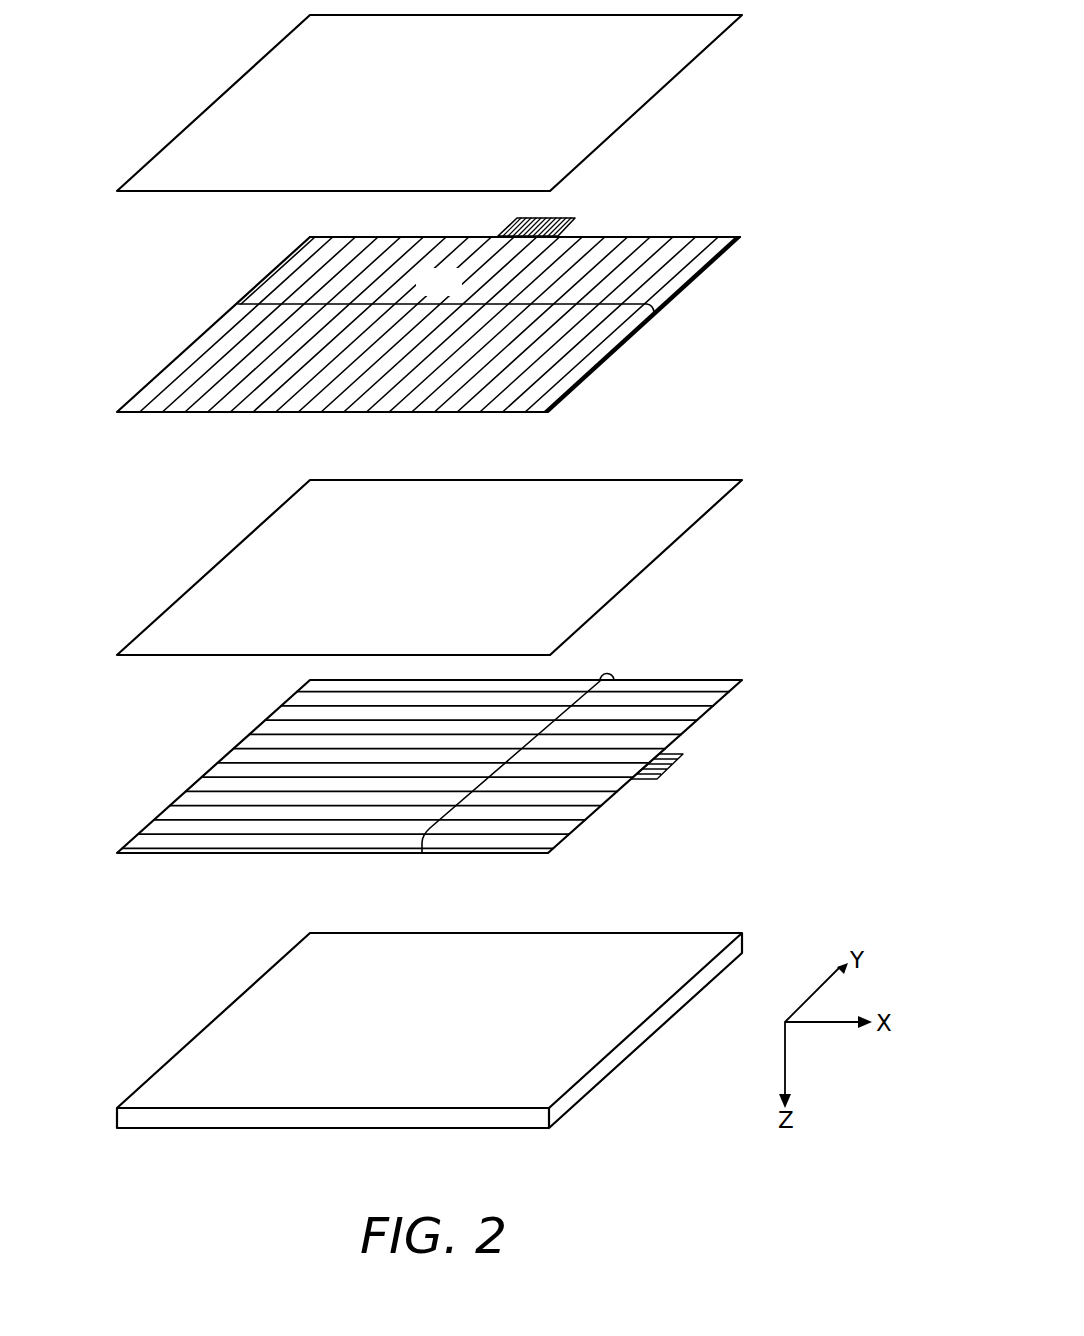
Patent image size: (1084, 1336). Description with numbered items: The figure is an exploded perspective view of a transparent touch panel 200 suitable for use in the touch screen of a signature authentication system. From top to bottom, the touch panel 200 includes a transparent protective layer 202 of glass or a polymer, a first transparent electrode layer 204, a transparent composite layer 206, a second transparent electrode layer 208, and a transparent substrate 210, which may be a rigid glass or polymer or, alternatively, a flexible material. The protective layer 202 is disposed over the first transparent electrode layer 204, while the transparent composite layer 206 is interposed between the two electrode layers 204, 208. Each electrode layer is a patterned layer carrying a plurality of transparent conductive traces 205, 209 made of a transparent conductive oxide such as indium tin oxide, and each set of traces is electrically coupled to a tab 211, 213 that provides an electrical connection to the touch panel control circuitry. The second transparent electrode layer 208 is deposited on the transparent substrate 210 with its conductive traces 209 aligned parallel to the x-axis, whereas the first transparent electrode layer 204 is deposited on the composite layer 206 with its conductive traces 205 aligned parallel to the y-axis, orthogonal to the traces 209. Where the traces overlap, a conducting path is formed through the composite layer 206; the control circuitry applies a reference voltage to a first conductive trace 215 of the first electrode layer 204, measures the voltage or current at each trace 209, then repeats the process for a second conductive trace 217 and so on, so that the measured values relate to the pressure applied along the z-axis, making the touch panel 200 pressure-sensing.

The transparent touch panel 200 is at (482, 571).
The transparent protective layer 202 is at (216, 100).
The first transparent electrode layer 204 is at (428, 298).
The transparent conductive traces 205 is at (452, 304).
The transparent composite layer 206 is at (216, 565).
The second transparent electrode layer 208 is at (429, 763).
The transparent conductive traces 209 is at (523, 747).
The transparent substrate 210 is at (215, 1018).
The tab 211 is at (560, 217).
The tab 213 is at (684, 762).
The first conductive trace 215 is at (282, 268).
The second conductive trace 217 is at (333, 237).